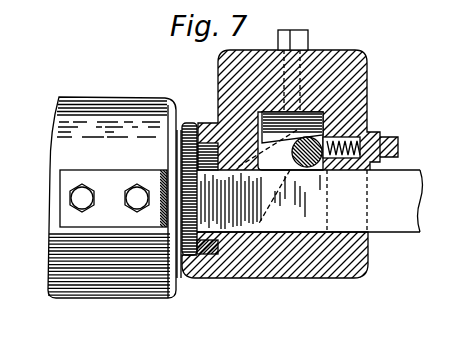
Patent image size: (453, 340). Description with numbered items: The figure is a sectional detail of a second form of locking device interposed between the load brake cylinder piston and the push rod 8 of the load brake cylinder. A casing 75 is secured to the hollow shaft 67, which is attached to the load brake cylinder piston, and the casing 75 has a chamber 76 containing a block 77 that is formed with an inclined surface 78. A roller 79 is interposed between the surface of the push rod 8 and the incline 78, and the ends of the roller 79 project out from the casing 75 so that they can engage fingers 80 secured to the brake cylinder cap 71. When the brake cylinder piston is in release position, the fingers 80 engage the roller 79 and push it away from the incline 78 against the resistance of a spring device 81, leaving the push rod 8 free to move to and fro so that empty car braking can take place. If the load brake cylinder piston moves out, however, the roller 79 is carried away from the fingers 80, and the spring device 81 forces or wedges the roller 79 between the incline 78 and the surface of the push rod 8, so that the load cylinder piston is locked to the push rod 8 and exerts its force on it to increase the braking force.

The push rod 8 is at (385, 222).
The hollow shaft 67 is at (207, 254).
The brake cylinder cap 71 is at (77, 285).
The casing 75 is at (345, 68).
The chamber 76 is at (327, 171).
The block 77 is at (322, 118).
The inclined surface 78 is at (298, 137).
The roller 79 is at (309, 168).
The fingers 80 is at (118, 183).
The spring device 81 is at (380, 137).